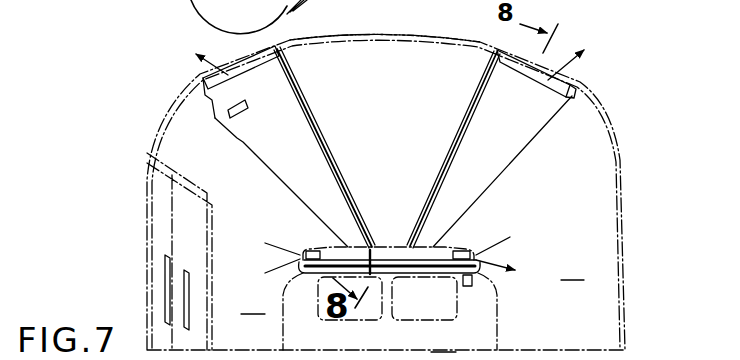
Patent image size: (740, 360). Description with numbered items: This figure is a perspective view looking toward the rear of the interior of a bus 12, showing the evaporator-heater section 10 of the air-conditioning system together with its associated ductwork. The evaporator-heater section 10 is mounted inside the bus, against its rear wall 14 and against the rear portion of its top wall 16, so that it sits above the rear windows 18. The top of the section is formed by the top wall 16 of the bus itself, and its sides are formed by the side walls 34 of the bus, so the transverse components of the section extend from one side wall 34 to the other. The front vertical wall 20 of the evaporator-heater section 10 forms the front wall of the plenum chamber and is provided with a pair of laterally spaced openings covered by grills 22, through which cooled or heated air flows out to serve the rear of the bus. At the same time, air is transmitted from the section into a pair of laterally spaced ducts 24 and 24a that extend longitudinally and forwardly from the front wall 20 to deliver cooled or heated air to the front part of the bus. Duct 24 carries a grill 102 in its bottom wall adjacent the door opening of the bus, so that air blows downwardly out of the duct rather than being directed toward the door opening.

The evaporator-heater section 10 is at (468, 286).
The bus 12 is at (624, 282).
The rear wall 14 is at (447, 340).
The top wall 16 is at (404, 47).
The rear windows 18 is at (365, 322).
The front vertical wall 20 is at (388, 244).
The grills 22 is at (462, 249).
The duct 24 is at (320, 131).
The duct 24a is at (458, 118).
The side walls 34 is at (416, 285).
The grill 102 is at (248, 113).